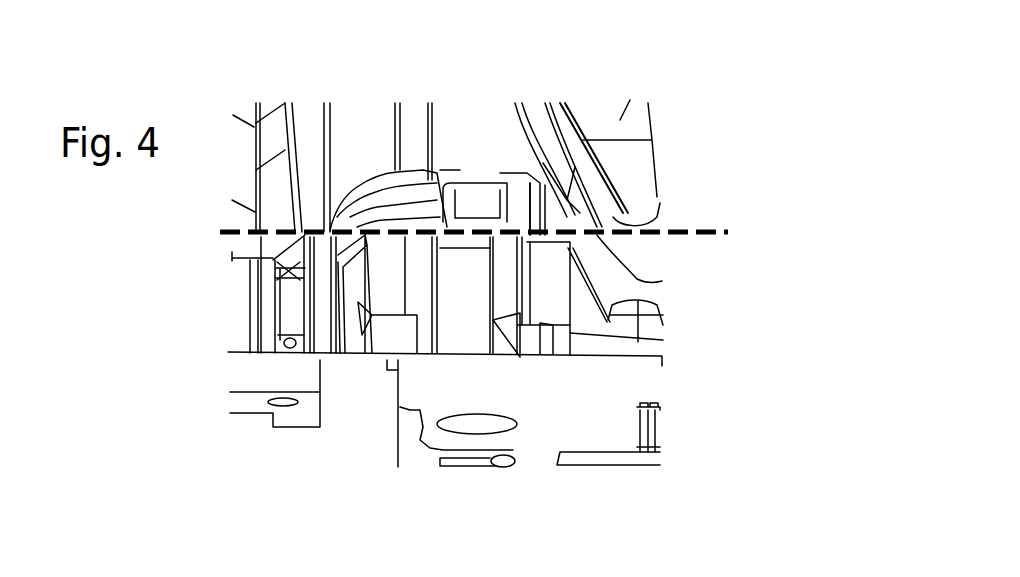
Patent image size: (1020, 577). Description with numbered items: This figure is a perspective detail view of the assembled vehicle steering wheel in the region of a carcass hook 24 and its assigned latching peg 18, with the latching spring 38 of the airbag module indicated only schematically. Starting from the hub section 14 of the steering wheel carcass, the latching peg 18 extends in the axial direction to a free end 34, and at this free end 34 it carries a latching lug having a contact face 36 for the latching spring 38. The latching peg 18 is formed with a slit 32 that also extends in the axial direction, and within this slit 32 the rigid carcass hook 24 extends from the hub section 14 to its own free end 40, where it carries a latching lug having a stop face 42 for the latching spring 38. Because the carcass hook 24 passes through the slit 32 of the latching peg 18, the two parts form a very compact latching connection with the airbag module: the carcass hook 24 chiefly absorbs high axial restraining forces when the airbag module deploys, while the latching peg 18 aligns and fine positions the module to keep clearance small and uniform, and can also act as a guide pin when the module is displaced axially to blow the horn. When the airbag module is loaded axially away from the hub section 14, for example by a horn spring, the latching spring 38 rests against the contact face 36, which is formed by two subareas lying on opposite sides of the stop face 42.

The hub section 14 is at (538, 420).
The latching peg 18 is at (552, 283).
The carcass hook 24 is at (465, 305).
The slit 32 is at (507, 357).
The free end 34 is at (507, 158).
The contact face 36 is at (402, 230).
The latching spring 38 is at (697, 233).
The free end 40 is at (455, 167).
The stop face 42 is at (477, 230).